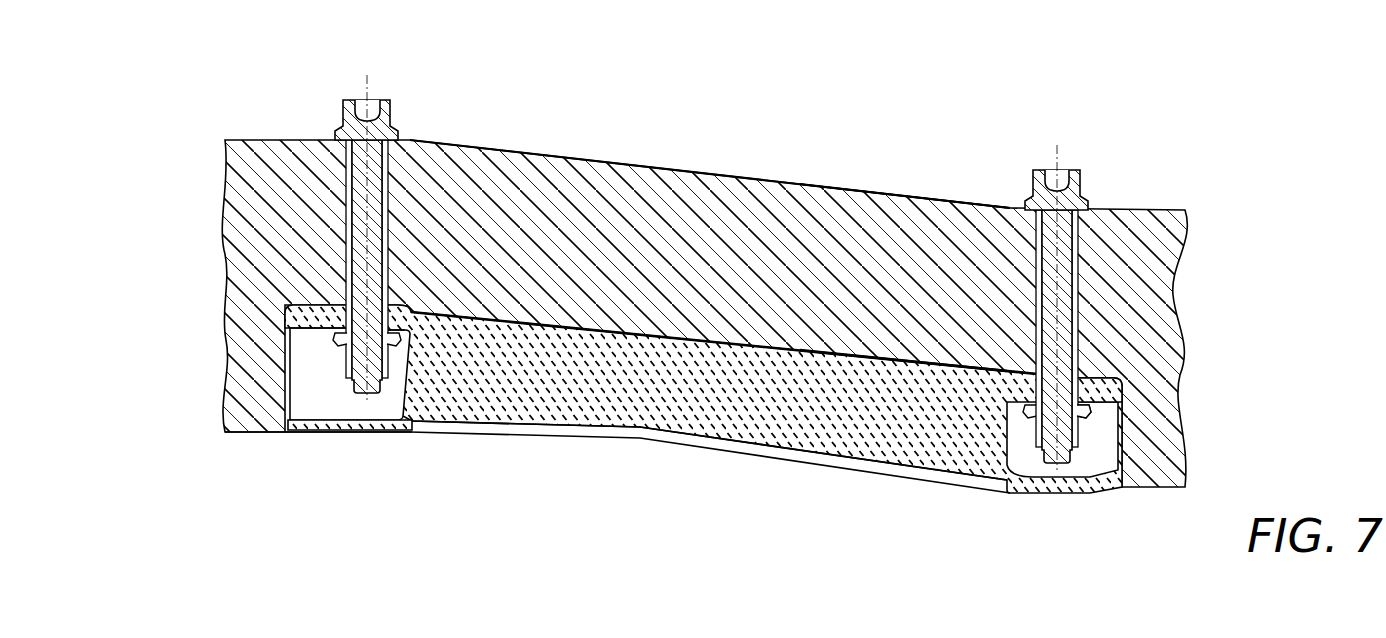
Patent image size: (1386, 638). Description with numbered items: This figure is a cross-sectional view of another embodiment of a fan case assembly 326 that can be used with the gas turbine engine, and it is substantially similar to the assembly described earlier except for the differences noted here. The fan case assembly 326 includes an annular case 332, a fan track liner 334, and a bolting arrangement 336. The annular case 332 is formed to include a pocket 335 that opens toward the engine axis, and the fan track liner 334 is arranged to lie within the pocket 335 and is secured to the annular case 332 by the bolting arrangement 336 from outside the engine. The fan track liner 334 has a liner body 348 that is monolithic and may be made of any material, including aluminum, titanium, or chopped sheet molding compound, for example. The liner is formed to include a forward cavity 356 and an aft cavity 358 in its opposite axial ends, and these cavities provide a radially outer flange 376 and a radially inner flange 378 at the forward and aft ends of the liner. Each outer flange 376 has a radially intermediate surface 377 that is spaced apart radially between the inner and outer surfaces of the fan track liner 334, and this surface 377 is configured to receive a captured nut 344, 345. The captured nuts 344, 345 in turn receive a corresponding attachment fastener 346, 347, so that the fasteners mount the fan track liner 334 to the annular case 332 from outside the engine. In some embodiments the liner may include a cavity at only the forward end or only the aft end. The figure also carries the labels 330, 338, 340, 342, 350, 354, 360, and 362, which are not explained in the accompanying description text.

The fan case assembly 326 is at (713, 163).
The mounting assembly 330 is at (704, 307).
The annular case 332 is at (583, 158).
The fan track liner 334 is at (614, 442).
The pocket 335 is at (1100, 413).
The bolting arrangement 336 is at (372, 236).
The bond line 338 is at (902, 372).
The upper surface portion 340 is at (858, 190).
The sleeve 342 is at (386, 165).
The captured nut 344 is at (343, 360).
The captured nut 345 is at (1098, 343).
The attachment fastener 346 is at (393, 104).
The attachment fastener 347 is at (1082, 175).
The liner body 348 is at (733, 425).
The bottom surface 350 is at (562, 430).
The lip 354 is at (1110, 370).
The forward cavity 356 is at (305, 385).
The aft cavity 358 is at (1088, 432).
The interface 360 is at (625, 333).
The base wall 362 is at (390, 433).
The outer flange 376 is at (289, 327).
The radially intermediate surface 377 is at (303, 335).
The inner flange 378 is at (373, 436).